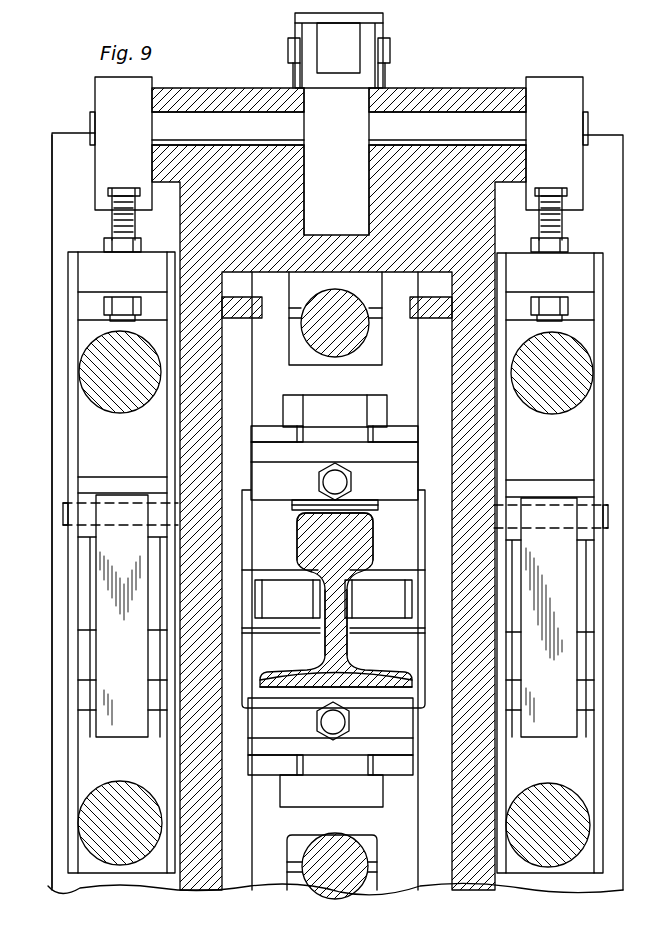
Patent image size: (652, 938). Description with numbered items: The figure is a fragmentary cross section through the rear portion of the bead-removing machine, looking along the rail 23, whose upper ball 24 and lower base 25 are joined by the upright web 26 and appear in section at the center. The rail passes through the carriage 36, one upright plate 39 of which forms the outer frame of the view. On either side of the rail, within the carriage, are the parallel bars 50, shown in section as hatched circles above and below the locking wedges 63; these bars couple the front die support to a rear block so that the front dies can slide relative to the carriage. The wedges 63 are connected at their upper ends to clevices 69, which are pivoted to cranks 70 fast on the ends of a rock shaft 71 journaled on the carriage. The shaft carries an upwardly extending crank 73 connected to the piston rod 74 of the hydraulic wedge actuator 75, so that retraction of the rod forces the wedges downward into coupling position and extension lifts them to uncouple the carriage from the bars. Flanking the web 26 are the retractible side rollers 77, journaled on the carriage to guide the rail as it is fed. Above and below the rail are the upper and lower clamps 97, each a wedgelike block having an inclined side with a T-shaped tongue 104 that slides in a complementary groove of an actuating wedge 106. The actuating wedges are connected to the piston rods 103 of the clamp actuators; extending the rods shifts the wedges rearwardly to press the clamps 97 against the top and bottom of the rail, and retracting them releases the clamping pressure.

The rail 23 is at (297, 527).
The upper ball 24 is at (368, 535).
The lower base 25 is at (362, 674).
The upright web 26 is at (326, 628).
The carriage 36 is at (52, 152).
The upright plate 39 is at (60, 192).
The parallel bars 50 is at (128, 408).
The wedges 63 is at (125, 730).
The clevices 69 is at (72, 270).
The cranks 70 is at (95, 96).
The rock shaft 71 is at (518, 131).
The crank 73 is at (372, 86).
The piston rod 74 is at (318, 36).
The wedge actuator 75 is at (386, 24).
The side rollers 77 is at (278, 600).
The clamps 97 is at (400, 459).
The piston rods 103 is at (316, 338).
The T-shaped tongue 104 is at (364, 400).
The actuating wedge 106 is at (337, 391).